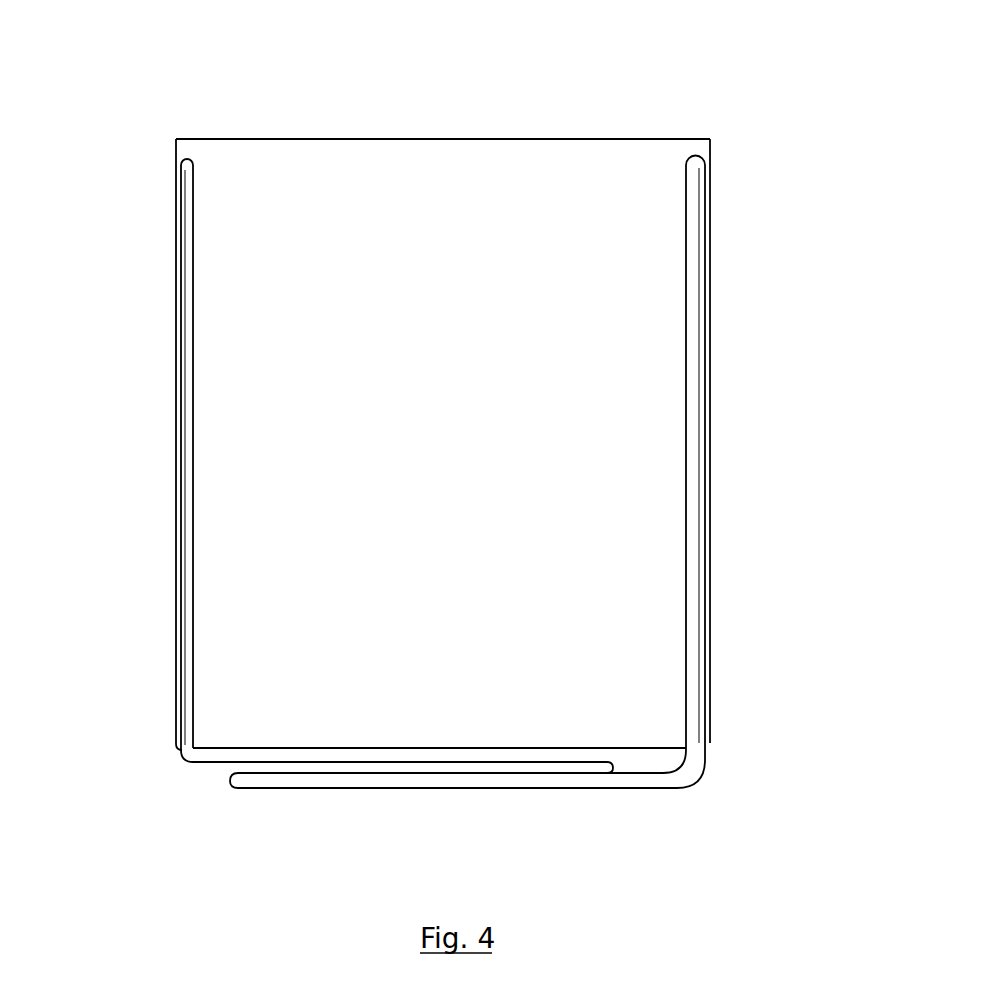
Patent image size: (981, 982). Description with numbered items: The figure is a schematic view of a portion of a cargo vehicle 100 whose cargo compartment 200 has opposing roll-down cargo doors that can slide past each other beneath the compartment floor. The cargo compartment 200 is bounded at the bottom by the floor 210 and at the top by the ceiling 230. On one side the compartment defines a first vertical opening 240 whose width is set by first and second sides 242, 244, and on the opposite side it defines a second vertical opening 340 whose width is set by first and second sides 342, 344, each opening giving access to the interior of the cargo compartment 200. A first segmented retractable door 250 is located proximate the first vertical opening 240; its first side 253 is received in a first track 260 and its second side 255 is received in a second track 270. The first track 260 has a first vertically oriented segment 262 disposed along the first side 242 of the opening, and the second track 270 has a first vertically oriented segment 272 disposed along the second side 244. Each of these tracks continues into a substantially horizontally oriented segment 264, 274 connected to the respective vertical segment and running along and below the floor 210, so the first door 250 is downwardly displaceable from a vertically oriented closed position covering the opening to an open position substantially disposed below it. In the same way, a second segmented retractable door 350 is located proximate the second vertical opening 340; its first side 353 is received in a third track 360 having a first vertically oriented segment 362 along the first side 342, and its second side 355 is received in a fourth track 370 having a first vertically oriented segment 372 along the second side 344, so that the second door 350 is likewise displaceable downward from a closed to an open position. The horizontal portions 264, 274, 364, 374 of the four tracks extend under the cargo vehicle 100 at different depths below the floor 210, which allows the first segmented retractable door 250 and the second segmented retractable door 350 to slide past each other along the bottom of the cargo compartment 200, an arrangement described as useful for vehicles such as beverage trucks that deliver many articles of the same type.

The cargo vehicle 100 is at (553, 97).
The cargo compartment 200 is at (458, 428).
The floor 210 is at (636, 746).
The ceiling 230 is at (410, 139).
The first vertical opening 240 is at (157, 250).
The first side of the first vertical opening 242 is at (128, 444).
The second side of the first vertical opening 244 is at (177, 607).
The first segmented retractable door 250 is at (111, 457).
The first side of the first segmented door 253 is at (111, 457).
The second side of the first segmented door 255 is at (165, 372).
The first track 260 is at (397, 425).
The second track 270 is at (195, 181).
The first vertically oriented segment of the first track 262 is at (261, 457).
The first vertically oriented segment of the second track 272 is at (193, 458).
The second substantially horizontally oriented segment of the first track 264 is at (397, 729).
The second substantially horizontally oriented segment of the second track 274 is at (322, 762).
The second vertical opening 340 is at (744, 211).
The first side of the second vertical opening 342 is at (792, 441).
The second side of the second vertical opening 344 is at (710, 345).
The second segmented retractable door 350 is at (789, 455).
The first side of the second segmented retractable door 353 is at (789, 455).
The second side of the second segmented retractable door 355 is at (711, 469).
The third track 360 is at (535, 467).
The fourth track 370 is at (682, 178).
The first vertically oriented segment of the third track 362 is at (657, 462).
The first vertically oriented segment of the fourth track 372 is at (683, 252).
The horizontal portion of the third track 364 is at (467, 802).
The horizontal portion of the fourth track 374 is at (378, 786).